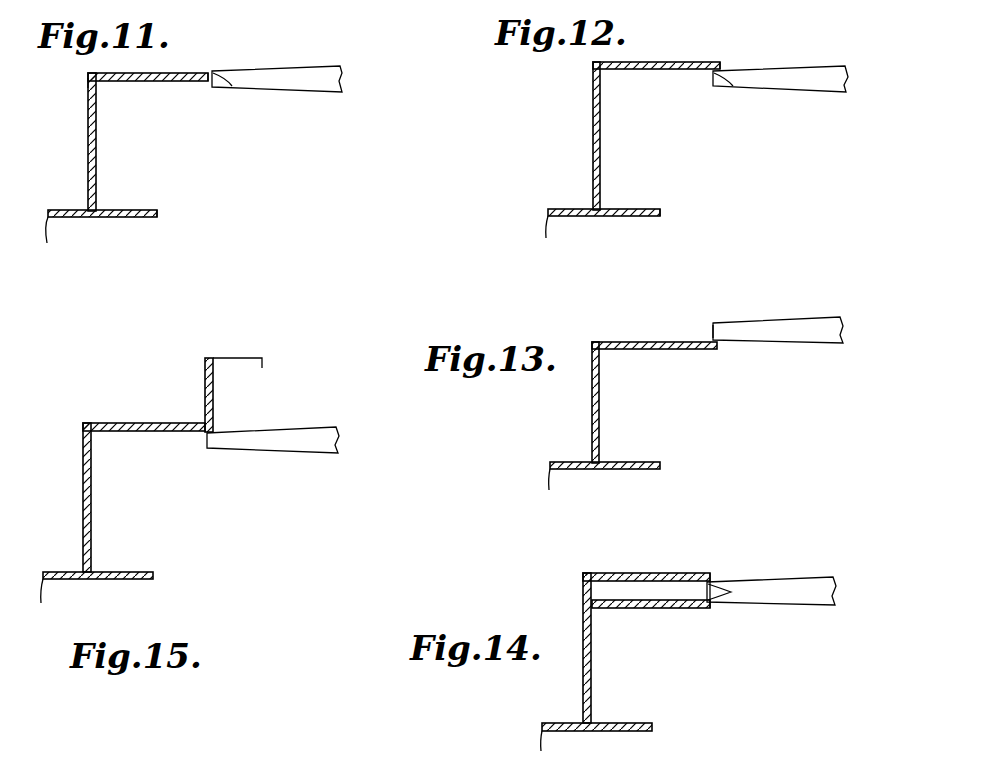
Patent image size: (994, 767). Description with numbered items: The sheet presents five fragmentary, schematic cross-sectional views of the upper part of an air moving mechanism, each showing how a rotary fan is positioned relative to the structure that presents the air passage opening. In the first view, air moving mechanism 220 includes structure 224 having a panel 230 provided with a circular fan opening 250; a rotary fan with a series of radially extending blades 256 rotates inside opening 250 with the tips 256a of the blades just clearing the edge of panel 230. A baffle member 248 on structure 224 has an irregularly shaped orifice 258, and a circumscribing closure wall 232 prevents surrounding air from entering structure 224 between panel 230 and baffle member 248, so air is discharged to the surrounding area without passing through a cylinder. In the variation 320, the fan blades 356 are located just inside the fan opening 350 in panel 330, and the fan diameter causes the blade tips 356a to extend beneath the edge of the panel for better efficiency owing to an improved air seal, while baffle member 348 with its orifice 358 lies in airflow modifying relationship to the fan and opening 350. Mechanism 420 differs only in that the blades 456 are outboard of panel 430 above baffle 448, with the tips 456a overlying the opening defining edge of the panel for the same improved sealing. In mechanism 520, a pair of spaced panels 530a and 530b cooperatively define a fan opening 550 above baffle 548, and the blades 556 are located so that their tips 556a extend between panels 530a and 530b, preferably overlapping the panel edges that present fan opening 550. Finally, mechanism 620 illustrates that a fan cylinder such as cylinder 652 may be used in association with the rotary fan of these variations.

In FIG. 11, the air moving mechanism 220 is at (200, 139).
In FIG. 11, the structure 224 is at (88, 83).
In FIG. 11, the panel 230 is at (156, 82).
In FIG. 11, the circumscribing closure wall 232 is at (88, 143).
In FIG. 11, the baffle member 248 is at (118, 218).
In FIG. 11, the fan opening 250 is at (206, 73).
In FIG. 11, the blades 256 is at (331, 68).
In FIG. 11, the blade tips 256a is at (231, 88).
In FIG. 11, the orifice 258 is at (157, 210).
In FIG. 12, the variation 320 is at (579, 113).
In FIG. 12, the panel 330 is at (647, 62).
In FIG. 12, the baffle member 348 is at (618, 213).
In FIG. 12, the fan opening 350 is at (720, 62).
In FIG. 12, the fan blades 356 is at (828, 88).
In FIG. 12, the blade tips 356a is at (713, 80).
In FIG. 12, the orifice 358 is at (660, 212).
In FIG. 13, the mechanism 420 is at (676, 415).
In FIG. 13, the panel 430 is at (638, 342).
In FIG. 13, the baffle 448 is at (637, 470).
In FIG. 13, the blades 456 is at (826, 337).
In FIG. 13, the tips 456a is at (712, 325).
In FIG. 14, the mechanism 520 is at (581, 678).
In FIG. 14, the panel 530a is at (664, 562).
In FIG. 14, the panel 530b is at (613, 606).
In FIG. 14, the baffle 548 is at (652, 731).
In FIG. 14, the fan opening 550 is at (715, 575).
In FIG. 14, the blades 556 is at (795, 583).
In FIG. 14, the tips 556a is at (731, 593).
In FIG. 15, the mechanism 620 is at (180, 497).
In FIG. 15, the cylinder 652 is at (205, 369).